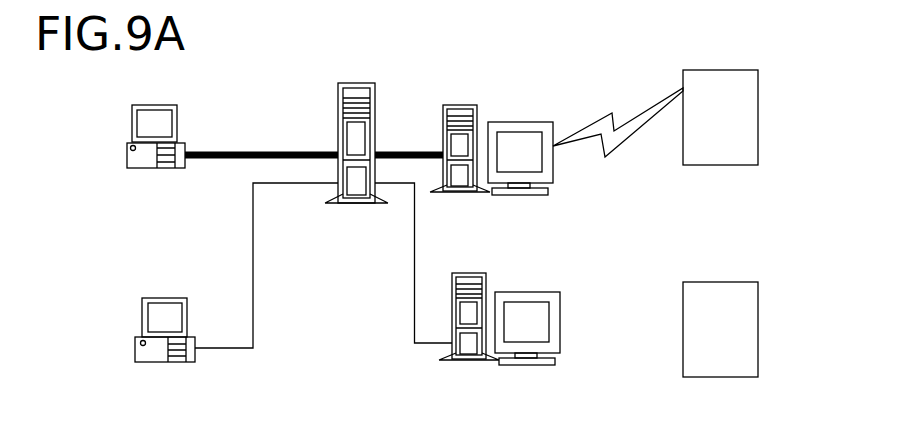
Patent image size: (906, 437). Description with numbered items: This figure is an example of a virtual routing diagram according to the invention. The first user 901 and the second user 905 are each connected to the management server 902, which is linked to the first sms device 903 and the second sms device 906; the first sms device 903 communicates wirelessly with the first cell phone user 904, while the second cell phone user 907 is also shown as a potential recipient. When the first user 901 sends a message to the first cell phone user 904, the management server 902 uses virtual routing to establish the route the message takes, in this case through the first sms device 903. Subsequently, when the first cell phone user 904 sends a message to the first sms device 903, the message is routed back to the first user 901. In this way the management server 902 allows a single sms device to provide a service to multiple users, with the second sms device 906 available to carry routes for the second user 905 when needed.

The user 1 901 is at (155, 105).
The management server 902 is at (355, 83).
The sms device 1 903 is at (458, 105).
The cell phone user 1 904 is at (718, 70).
The user 2 905 is at (160, 298).
The sms device 2 906 is at (530, 292).
The cell phone user 2 907 is at (720, 282).